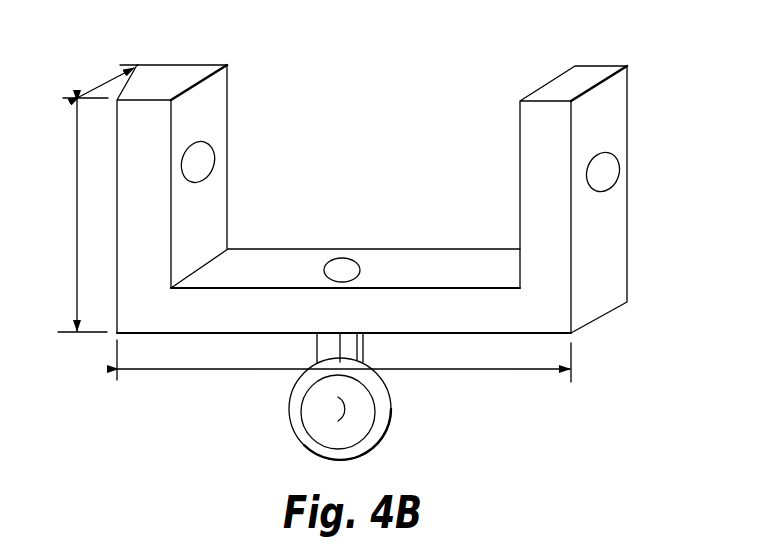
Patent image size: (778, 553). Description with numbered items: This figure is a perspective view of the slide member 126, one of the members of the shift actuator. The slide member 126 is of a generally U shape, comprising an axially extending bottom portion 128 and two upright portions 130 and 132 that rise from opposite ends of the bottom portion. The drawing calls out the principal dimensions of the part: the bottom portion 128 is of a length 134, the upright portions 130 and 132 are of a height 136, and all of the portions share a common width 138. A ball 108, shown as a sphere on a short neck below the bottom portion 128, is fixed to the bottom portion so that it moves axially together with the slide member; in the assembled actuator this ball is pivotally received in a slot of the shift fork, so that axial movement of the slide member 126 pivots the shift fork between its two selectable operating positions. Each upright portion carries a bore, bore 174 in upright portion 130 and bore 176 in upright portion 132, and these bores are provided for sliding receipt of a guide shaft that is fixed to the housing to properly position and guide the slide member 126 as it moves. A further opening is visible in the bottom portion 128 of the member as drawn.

The ball 108 is at (362, 433).
The slide member 126 is at (428, 199).
The bottom portion 128 is at (394, 266).
The upright portion 130 is at (217, 115).
The upright portion 132 is at (520, 133).
The length 134 is at (183, 369).
The height 136 is at (77, 282).
The width 138 is at (103, 90).
The bore 174 is at (206, 158).
The bore 176 is at (605, 180).